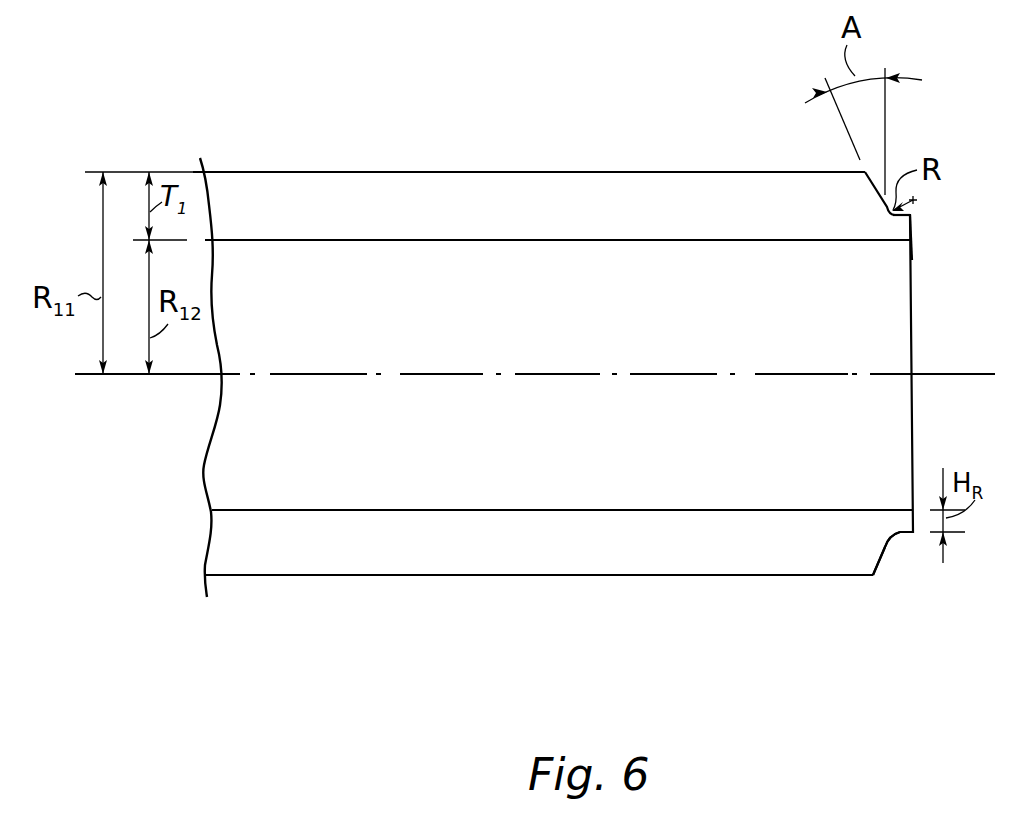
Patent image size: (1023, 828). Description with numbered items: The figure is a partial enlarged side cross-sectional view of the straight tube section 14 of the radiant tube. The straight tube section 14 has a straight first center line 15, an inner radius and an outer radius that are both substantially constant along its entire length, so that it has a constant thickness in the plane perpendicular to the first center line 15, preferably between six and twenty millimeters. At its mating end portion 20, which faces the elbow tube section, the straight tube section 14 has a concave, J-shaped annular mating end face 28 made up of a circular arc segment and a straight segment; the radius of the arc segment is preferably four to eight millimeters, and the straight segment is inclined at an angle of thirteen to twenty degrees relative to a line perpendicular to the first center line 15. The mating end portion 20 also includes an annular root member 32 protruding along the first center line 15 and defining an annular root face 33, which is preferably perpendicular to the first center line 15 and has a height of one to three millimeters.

The straight tube section 14 is at (541, 577).
The first center line 15 is at (942, 368).
The mating end portion 20 is at (846, 533).
The mating end face 28 is at (888, 552).
The annular root member 32 is at (898, 227).
The annular root face 33 is at (912, 225).